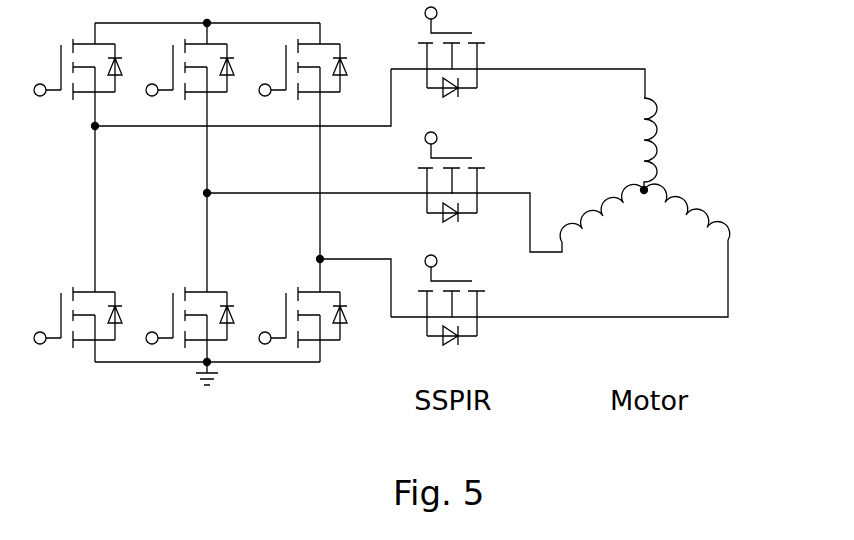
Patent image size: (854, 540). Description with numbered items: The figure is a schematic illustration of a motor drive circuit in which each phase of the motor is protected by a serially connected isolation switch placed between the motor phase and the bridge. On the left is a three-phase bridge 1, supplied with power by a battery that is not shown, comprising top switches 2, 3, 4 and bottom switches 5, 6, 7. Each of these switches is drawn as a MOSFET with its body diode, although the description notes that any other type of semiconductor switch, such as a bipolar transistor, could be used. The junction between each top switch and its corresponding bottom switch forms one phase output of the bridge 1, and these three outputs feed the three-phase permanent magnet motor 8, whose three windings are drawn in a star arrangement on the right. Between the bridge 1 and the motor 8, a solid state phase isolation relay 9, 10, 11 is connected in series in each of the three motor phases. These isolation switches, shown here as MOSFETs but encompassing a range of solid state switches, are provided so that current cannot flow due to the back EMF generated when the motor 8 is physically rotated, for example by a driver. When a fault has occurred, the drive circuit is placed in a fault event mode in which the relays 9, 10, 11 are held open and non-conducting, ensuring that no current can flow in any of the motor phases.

The bridge 1 is at (190, 232).
The top switch 2 is at (78, 74).
The top switch 3 is at (190, 74).
The top switch 4 is at (303, 74).
The bottom switch 5 is at (78, 312).
The bottom switch 6 is at (190, 312).
The bottom switch 7 is at (303, 312).
The 3 phase permanent magnet motor 8 is at (718, 125).
The solid state phase isolation relay 9 is at (480, 55).
The solid state phase isolation relay 10 is at (491, 177).
The solid state phase isolation relay 11 is at (559, 306).